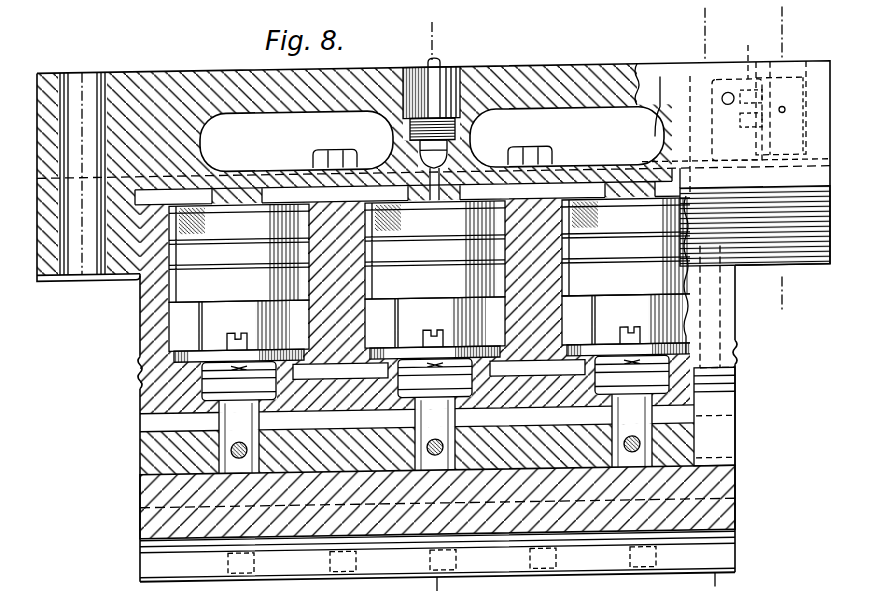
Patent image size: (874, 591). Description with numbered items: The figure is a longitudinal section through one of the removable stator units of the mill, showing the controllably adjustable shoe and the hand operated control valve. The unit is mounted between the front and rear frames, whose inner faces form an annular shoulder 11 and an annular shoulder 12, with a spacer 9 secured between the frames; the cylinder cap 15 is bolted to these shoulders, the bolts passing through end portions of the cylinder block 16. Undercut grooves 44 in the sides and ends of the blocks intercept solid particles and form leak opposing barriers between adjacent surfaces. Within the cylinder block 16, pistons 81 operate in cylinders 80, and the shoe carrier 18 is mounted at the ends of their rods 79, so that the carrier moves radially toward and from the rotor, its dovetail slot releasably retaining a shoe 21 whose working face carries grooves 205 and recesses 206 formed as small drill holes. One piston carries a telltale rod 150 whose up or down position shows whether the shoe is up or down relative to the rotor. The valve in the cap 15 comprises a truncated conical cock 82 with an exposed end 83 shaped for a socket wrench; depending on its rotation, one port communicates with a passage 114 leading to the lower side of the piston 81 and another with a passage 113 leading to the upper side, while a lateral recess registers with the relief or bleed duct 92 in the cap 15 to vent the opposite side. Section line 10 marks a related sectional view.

The spacer 9 is at (441, 586).
The section line 10- 10 is at (716, 589).
The annular shoulder 11 is at (782, 298).
The annular shoulder 12 is at (742, 278).
The cylinder cap 15 is at (160, 77).
The cylinder block 16 is at (152, 331).
The shoe carrier 18 is at (735, 450).
The shoe 21 is at (722, 522).
The undercut groove 44 is at (140, 364).
The rod 79 is at (256, 323).
The cylinder 80 is at (172, 327).
The piston 81 is at (435, 250).
The truncated conical cock 82 is at (796, 116).
The exposed end 83 is at (778, 74).
The relief duct 92 is at (734, 120).
The passage 113 is at (696, 80).
The passage 114 is at (726, 320).
The rod 150 is at (436, 94).
The groove 205 is at (165, 556).
The recess 206 is at (632, 562).